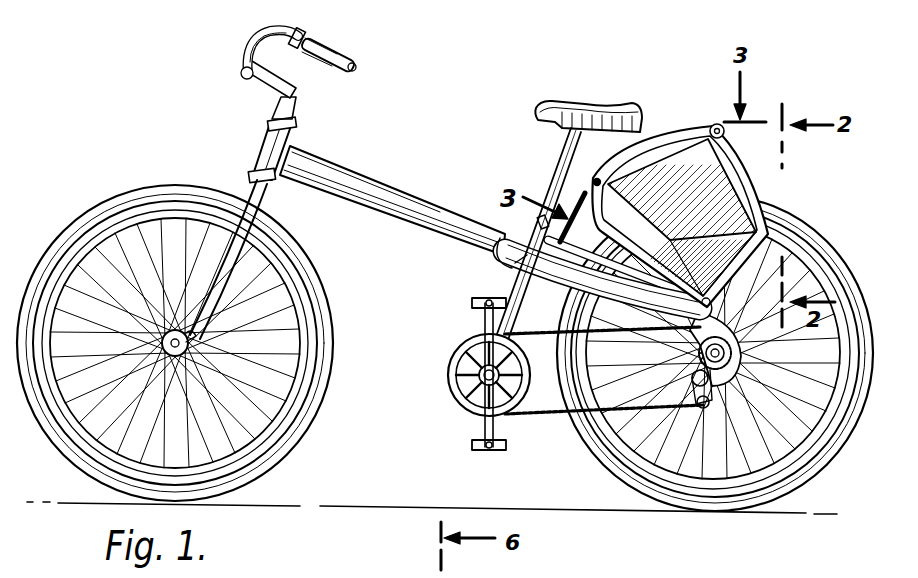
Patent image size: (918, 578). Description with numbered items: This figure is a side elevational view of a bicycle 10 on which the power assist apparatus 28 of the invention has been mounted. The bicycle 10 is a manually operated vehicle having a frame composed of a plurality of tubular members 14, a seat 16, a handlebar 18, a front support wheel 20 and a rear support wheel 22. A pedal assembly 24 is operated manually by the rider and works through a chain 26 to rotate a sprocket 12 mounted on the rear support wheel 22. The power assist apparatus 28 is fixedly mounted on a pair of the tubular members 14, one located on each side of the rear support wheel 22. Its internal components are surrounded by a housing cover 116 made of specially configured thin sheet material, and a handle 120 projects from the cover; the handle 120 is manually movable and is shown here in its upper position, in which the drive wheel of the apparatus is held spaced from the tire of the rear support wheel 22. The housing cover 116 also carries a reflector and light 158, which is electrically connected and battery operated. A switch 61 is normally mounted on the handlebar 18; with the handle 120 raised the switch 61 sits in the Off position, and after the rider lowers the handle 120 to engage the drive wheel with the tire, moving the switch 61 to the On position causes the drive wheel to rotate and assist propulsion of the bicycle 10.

The bicycle 10 is at (388, 177).
The sprocket 12 is at (802, 466).
The tubular members 14 is at (438, 234).
The seat 16 is at (595, 102).
The handlebar 18 is at (252, 34).
The front support wheel 20 is at (154, 175).
The rear support wheel 22 is at (811, 238).
The pedal assembly 24 is at (480, 424).
The chain 26 is at (570, 424).
The power assist apparatus 28 is at (681, 120).
The switch 61 is at (302, 34).
The housing cover 116 is at (706, 177).
The handle 120 is at (517, 272).
The reflector and light 158 is at (724, 132).